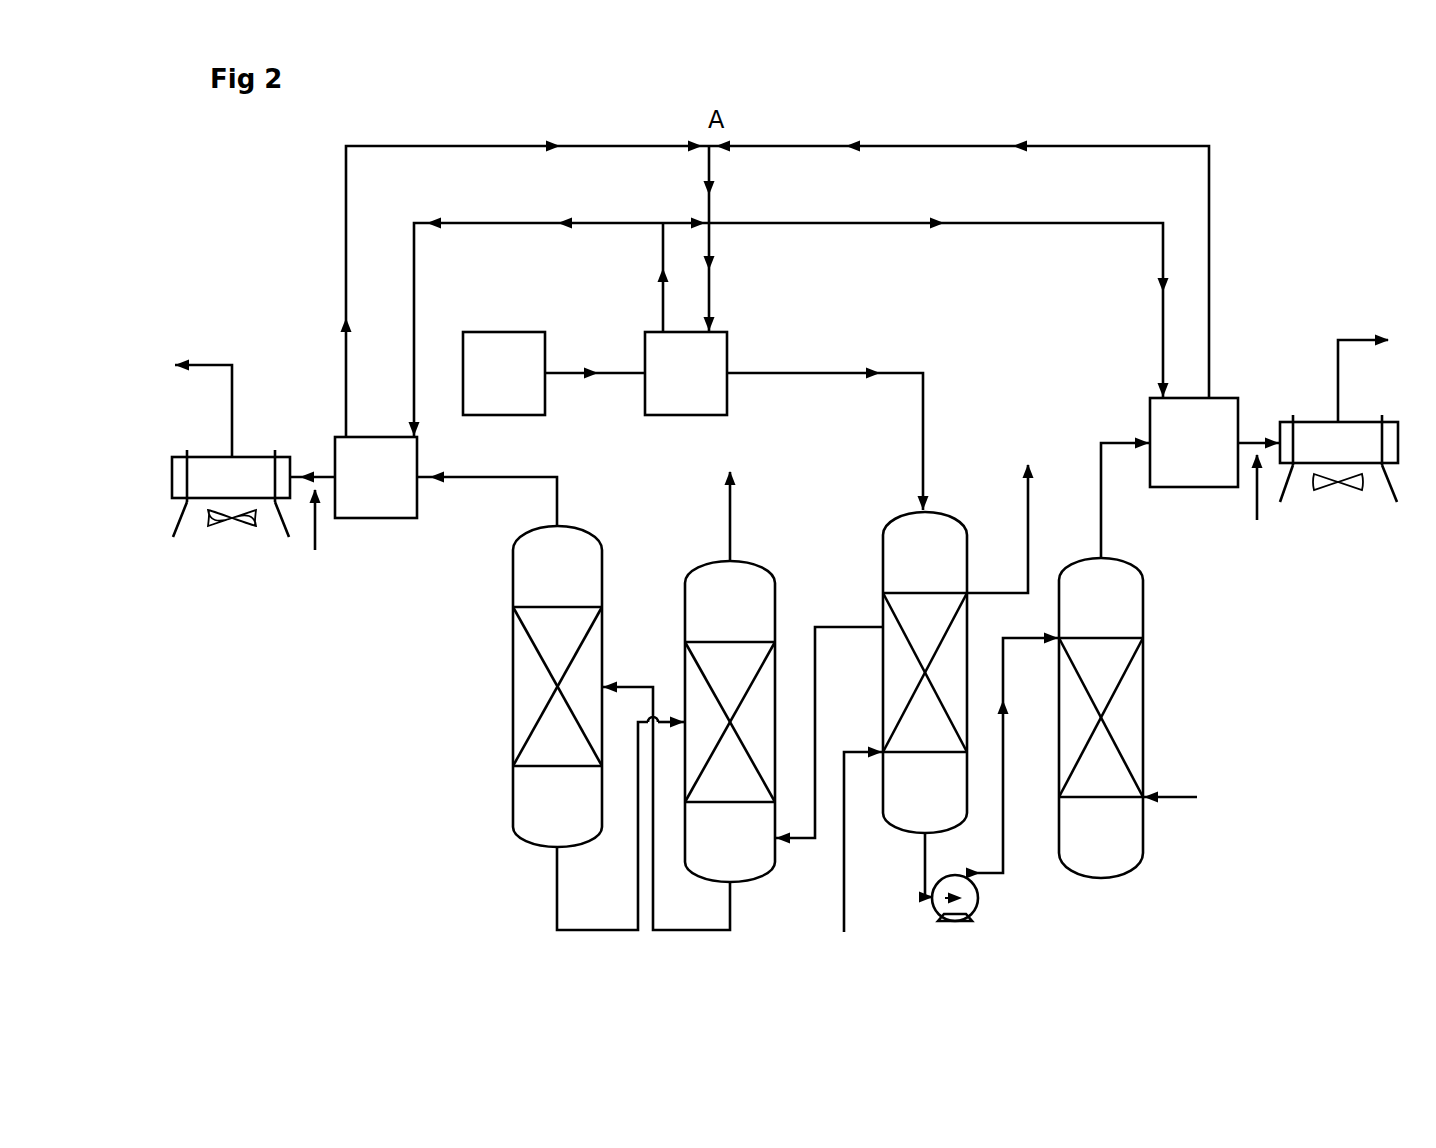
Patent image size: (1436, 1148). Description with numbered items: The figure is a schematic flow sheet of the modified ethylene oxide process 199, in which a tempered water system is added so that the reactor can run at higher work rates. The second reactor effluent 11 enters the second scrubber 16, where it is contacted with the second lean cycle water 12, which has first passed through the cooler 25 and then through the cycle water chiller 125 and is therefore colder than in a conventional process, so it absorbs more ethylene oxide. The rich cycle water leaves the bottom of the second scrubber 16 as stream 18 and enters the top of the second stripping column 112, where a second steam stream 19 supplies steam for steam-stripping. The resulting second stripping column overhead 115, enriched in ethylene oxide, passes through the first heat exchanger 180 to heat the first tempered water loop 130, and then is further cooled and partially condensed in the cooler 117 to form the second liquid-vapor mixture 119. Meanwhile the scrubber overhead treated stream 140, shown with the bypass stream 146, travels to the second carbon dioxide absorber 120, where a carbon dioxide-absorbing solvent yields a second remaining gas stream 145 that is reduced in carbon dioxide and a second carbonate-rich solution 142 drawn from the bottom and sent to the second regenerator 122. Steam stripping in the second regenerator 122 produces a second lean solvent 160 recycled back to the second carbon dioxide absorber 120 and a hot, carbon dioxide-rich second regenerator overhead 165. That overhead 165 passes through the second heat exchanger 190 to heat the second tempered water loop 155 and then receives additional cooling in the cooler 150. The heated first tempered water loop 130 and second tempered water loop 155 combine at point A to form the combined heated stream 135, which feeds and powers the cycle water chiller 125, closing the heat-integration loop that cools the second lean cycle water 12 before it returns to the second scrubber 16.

The modified ethylene oxide process 199 is at (1230, 93).
The second tempered water loop 155 is at (420, 141).
The first tempered water loop 130 is at (1100, 200).
The combined heated stream 135 is at (727, 237).
The cooler 25 is at (504, 373).
The second lean cycle water 12 is at (737, 423).
The cycle water chiller 125 is at (686, 373).
The second heat exchanger 190 is at (376, 477).
The first heat exchanger 180 is at (1194, 442).
The second regenerator overhead 165 is at (366, 461).
The cooler 150 is at (231, 493).
The cooler 117 is at (1318, 458).
The second liquid-vapor mixture 119 is at (1362, 363).
The second stripping column overhead 115 is at (1192, 498).
The second regenerator 122 is at (557, 686).
The second carbon dioxide absorber 120 is at (730, 721).
The second scrubber 16 is at (925, 672).
The second stripping column 112 is at (1101, 718).
The second remaining gas stream 145 is at (701, 516).
The bypass stream 146 is at (1009, 512).
The scrubber overhead treated stream 140 is at (829, 735).
The second lean solvent 160 is at (596, 827).
The second carbonate-rich solution 142 is at (673, 825).
The second reactor effluent 11 is at (847, 840).
The second rich cycle water stream 18 is at (971, 777).
The second steam stream 19 is at (1188, 798).